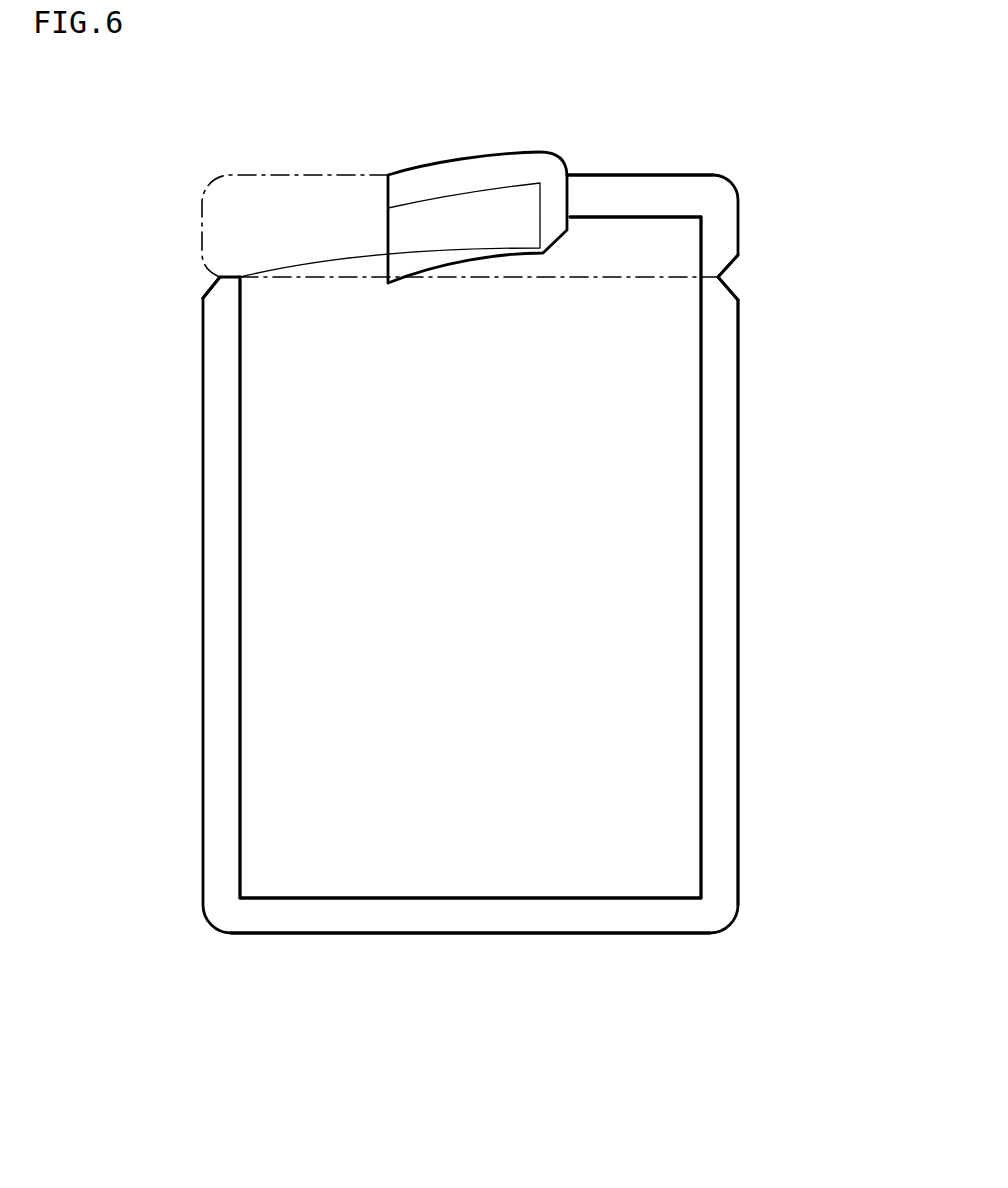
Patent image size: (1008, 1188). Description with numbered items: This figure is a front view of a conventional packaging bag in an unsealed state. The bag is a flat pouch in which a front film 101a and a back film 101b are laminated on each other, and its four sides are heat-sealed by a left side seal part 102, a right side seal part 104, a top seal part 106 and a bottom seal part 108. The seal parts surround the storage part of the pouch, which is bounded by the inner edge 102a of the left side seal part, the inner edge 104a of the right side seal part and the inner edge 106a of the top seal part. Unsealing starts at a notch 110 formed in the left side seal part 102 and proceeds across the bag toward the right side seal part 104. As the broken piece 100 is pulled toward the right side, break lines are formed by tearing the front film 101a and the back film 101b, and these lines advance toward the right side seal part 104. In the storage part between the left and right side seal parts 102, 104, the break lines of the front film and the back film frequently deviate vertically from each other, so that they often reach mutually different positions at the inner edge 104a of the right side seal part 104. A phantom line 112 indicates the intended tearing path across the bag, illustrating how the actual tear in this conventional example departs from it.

The broken piece 100 is at (403, 175).
The front film 101a is at (652, 632).
The back film 101b is at (500, 218).
The side seal part (left) 102 is at (203, 575).
The inner edge of left side seal part 102a is at (248, 673).
The side seal part (right) 104 is at (740, 405).
The inner edge of right side seal part 104a is at (685, 488).
The top seal part 106 is at (655, 175).
The inner edge of top seal part 106a is at (614, 232).
The bottom seal part 108 is at (470, 935).
The notch 110 is at (718, 277).
The phantom outline 112 is at (470, 280).